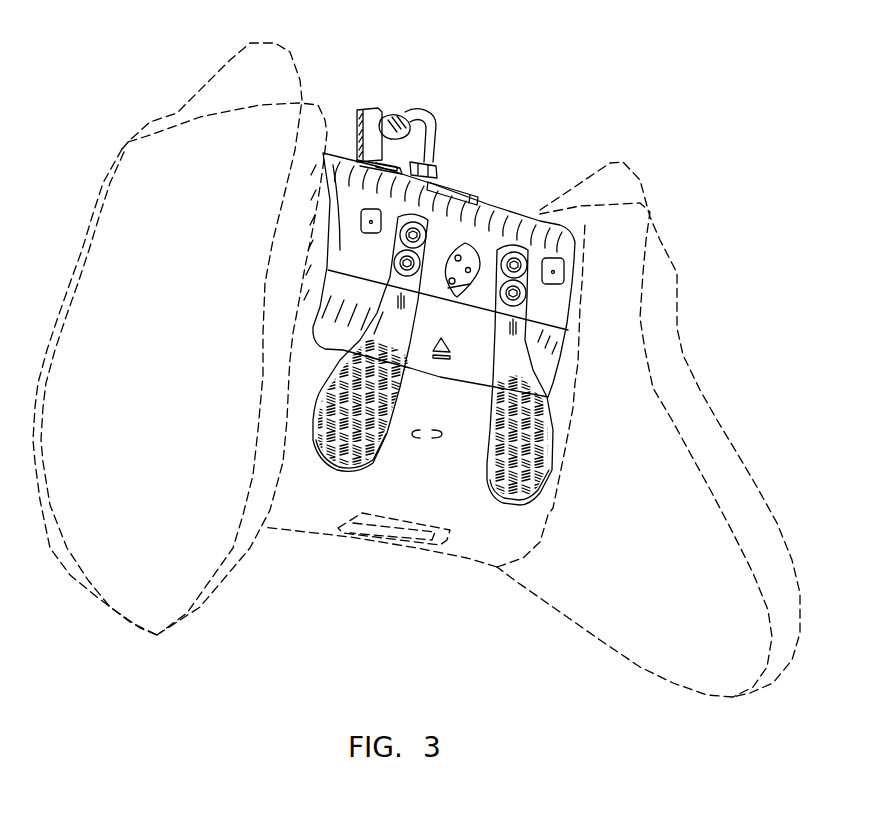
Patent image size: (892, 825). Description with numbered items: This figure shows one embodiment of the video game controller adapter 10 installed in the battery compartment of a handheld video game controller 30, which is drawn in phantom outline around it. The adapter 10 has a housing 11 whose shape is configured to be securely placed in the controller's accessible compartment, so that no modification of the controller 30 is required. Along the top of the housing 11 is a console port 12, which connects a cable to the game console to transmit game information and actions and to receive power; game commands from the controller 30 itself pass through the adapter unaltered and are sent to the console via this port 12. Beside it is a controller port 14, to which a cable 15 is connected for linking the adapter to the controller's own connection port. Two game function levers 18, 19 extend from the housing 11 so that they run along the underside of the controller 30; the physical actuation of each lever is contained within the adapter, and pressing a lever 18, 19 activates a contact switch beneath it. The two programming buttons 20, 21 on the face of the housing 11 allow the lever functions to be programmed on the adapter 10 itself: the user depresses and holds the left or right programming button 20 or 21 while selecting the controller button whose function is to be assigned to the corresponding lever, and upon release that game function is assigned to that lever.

The video game controller adapter 10 is at (523, 186).
The housing 11 is at (492, 206).
The console port 12 is at (458, 192).
The controller port 14 is at (437, 163).
The cable 15 is at (420, 108).
The game function lever 18 is at (530, 367).
The lever 19 is at (396, 393).
The programming button 20 is at (568, 268).
The programming button 21 is at (352, 222).
The handheld video game controller 30 is at (680, 343).